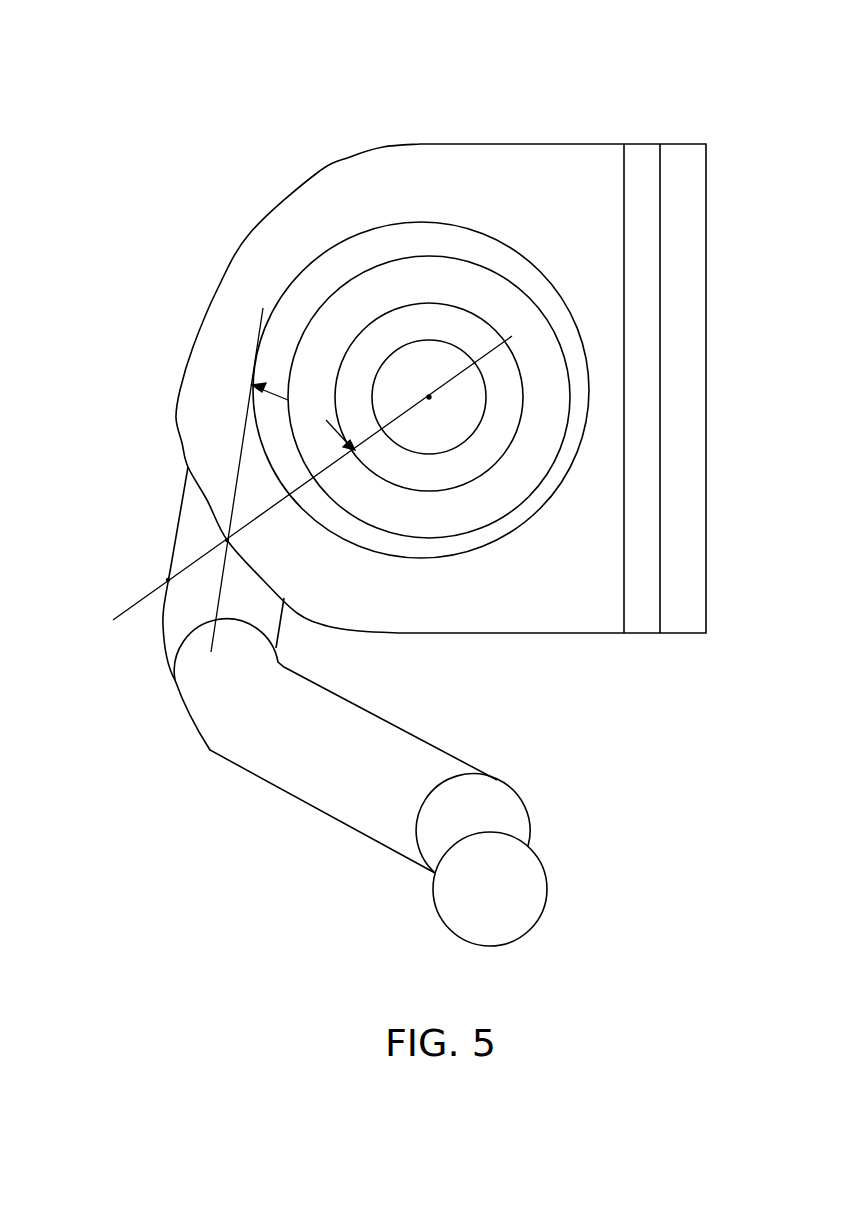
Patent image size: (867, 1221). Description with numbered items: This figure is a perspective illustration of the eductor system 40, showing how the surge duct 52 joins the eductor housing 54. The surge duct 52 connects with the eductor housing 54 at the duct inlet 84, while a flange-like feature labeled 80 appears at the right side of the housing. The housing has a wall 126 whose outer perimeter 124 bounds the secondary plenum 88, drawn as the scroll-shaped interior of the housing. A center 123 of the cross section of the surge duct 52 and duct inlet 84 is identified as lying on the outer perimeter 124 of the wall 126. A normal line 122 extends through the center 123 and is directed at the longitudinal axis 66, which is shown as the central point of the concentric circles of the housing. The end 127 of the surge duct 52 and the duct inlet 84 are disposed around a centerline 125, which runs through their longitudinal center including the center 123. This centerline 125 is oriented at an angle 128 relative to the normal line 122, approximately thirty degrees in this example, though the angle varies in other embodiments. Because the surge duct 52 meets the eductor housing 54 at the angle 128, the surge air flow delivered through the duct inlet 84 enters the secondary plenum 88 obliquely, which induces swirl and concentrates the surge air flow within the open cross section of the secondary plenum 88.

The eductor system 40 is at (541, 117).
The mounting flange 80 is at (680, 144).
The wall 126 is at (238, 278).
The secondary plenum 88 is at (203, 352).
The outer perimeter 124 is at (183, 366).
The eductor housing 54 is at (181, 443).
The duct inlet 84 is at (187, 477).
The end 127 is at (166, 574).
The normal line 122 is at (127, 607).
The center 123 is at (227, 540).
The centerline 125 is at (220, 614).
The angle 128 is at (303, 416).
The longitudinal axis 66 is at (429, 396).
The surge duct 52 is at (297, 798).